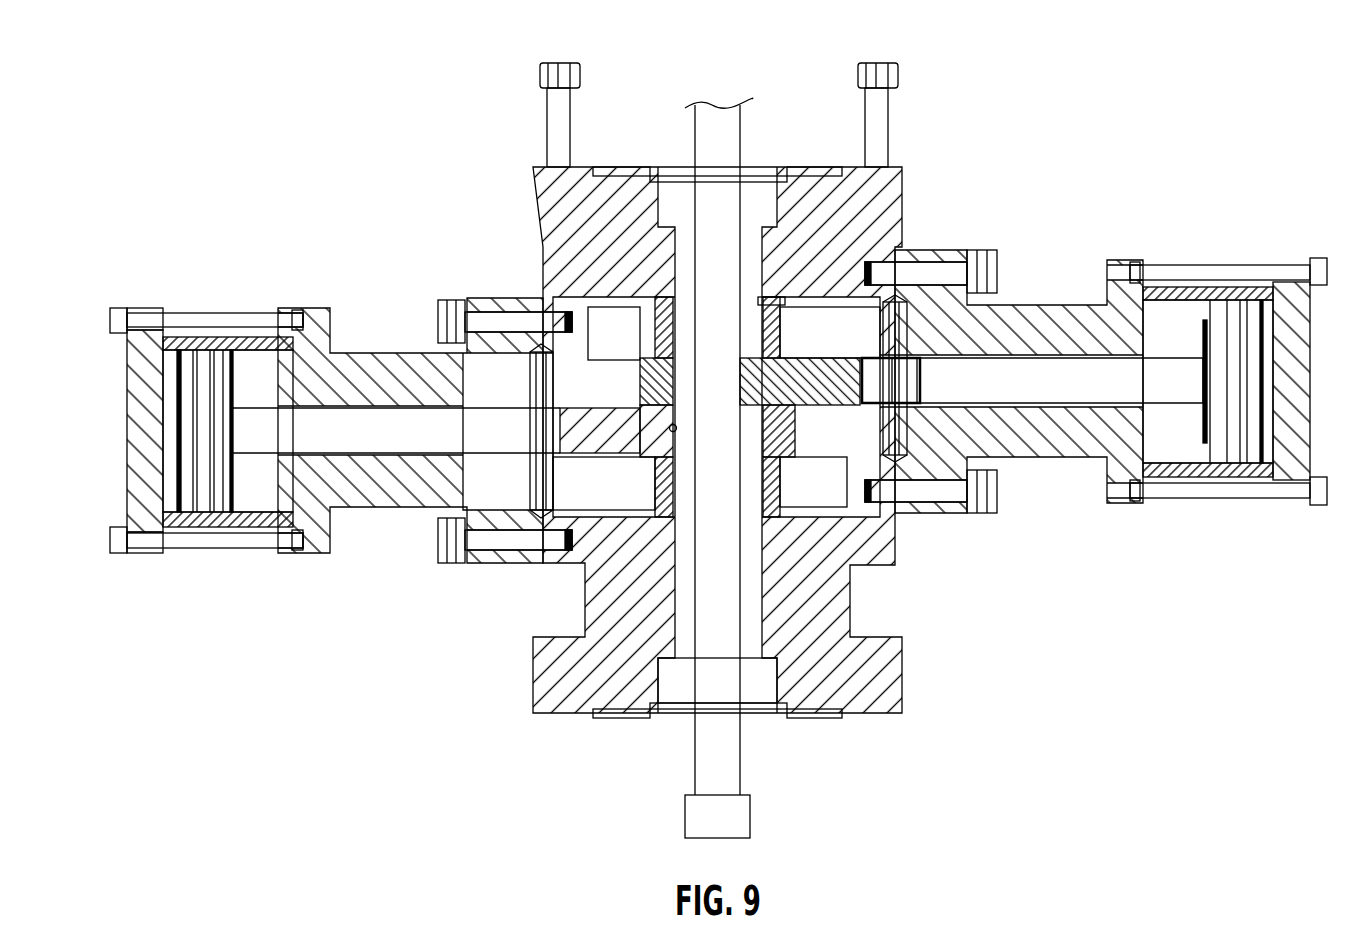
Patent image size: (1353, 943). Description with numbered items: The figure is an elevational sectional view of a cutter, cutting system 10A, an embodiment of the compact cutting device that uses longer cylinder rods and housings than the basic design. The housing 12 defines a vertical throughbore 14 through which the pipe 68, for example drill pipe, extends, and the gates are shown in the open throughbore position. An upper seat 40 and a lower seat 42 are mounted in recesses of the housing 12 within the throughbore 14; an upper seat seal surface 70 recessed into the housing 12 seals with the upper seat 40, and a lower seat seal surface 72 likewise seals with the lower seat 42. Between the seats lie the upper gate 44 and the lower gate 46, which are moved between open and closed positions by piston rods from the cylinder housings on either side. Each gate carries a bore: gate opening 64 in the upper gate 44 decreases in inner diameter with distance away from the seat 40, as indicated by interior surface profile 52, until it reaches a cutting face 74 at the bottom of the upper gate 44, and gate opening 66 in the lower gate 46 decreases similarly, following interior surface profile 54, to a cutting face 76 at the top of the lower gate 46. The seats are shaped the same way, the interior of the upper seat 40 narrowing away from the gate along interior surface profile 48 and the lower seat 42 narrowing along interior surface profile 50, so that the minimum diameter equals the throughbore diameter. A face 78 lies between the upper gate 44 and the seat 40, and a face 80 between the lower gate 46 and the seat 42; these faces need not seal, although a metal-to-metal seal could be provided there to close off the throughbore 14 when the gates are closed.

The cutting system 10A is at (1110, 94).
The housing 12 is at (580, 240).
The throughbore 14 is at (752, 190).
The upper seat 40 is at (740, 318).
The lower seat 42 is at (762, 510).
The upper gate 44 is at (843, 365).
The lower gate 46 is at (605, 444).
The interior surface profile 48 is at (673, 357).
The interior surface profile 50 is at (673, 465).
The interior surface profile 52 is at (673, 382).
The interior surface profile 54 is at (673, 405).
The gate opening 64 is at (752, 368).
The gate opening 66 is at (747, 427).
The pipe 68 is at (743, 752).
The upper seat seal surface 70 is at (773, 303).
The lower seat seal surface 72 is at (770, 505).
The cutting face 74 is at (768, 405).
The cutting face 76 is at (670, 400).
The face 78 is at (668, 350).
The face 80 is at (770, 433).